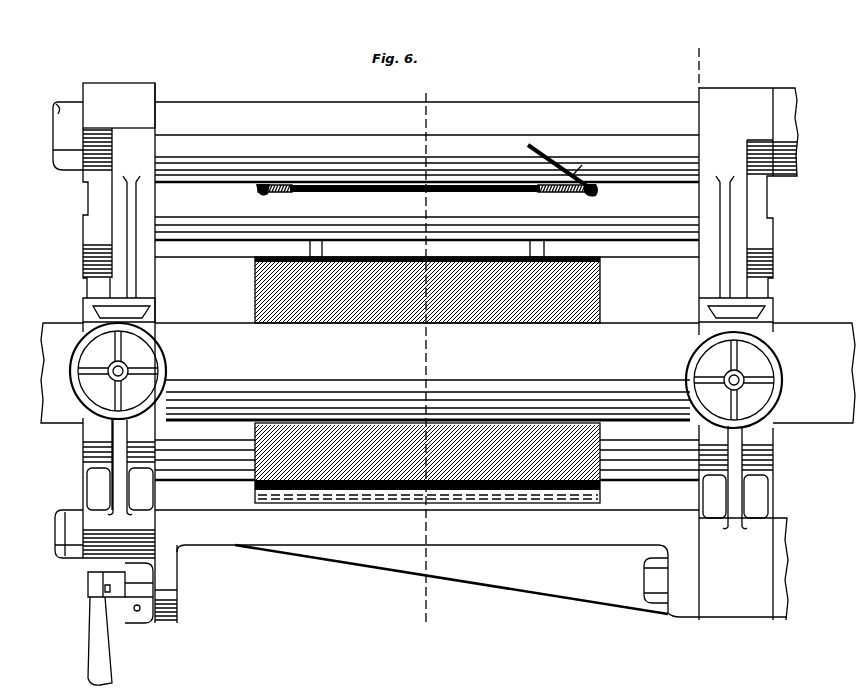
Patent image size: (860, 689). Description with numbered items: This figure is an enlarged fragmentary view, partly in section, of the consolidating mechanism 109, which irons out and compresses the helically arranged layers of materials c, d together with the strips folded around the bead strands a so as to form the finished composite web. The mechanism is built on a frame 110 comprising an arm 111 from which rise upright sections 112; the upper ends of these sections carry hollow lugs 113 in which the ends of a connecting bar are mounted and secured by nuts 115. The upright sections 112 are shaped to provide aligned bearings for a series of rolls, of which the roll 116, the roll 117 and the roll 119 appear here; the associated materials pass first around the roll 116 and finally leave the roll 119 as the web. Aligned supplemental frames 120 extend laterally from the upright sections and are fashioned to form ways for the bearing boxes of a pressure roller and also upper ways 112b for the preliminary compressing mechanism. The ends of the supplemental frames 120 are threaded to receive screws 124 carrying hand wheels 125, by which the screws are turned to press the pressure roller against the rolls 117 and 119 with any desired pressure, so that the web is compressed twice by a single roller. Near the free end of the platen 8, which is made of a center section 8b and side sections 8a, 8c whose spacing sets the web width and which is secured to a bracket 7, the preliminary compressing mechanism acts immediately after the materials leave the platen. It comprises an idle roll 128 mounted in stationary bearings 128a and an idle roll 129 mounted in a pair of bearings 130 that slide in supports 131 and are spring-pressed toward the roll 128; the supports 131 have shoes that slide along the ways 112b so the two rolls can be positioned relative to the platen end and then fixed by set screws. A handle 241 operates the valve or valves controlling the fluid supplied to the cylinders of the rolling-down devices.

The bracket 7 is at (418, 629).
The platen 8 is at (691, 556).
The consolidating mechanism 109 is at (448, 353).
The frame 110 is at (451, 579).
The arm 111 is at (587, 593).
The upright sections 112 is at (762, 212).
The ways 112b is at (710, 318).
The hollow lugs 113 is at (735, 99).
The nuts 115 is at (66, 96).
The roll 116 is at (187, 262).
The roll 117 is at (223, 273).
The roll 119 is at (215, 468).
The supplemental frames 120 is at (776, 454).
The screws 124 is at (426, 375).
The hand wheels 125 is at (690, 370).
The idle roll 128 is at (318, 141).
The stationary bearings 128a is at (708, 152).
The idle roll 129 is at (610, 243).
The bearings 130 is at (700, 242).
The supports 131 is at (708, 220).
The handle 241 is at (100, 667).
The platen side section 8a is at (545, 188).
The platen center section 8b is at (405, 184).
The platen side section 8c is at (298, 182).
The bead strands a is at (600, 204).
The material c is at (561, 168).
The material d is at (580, 162).